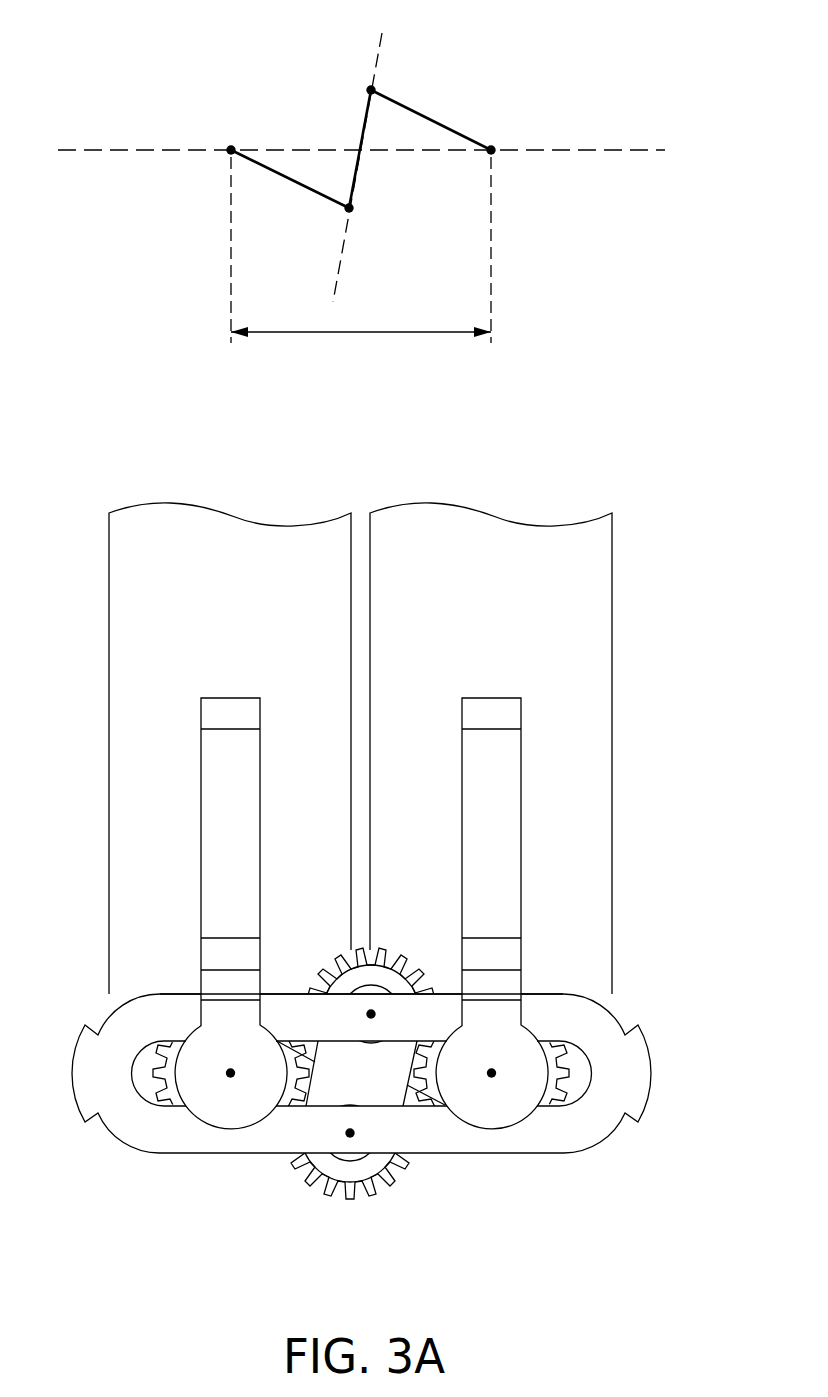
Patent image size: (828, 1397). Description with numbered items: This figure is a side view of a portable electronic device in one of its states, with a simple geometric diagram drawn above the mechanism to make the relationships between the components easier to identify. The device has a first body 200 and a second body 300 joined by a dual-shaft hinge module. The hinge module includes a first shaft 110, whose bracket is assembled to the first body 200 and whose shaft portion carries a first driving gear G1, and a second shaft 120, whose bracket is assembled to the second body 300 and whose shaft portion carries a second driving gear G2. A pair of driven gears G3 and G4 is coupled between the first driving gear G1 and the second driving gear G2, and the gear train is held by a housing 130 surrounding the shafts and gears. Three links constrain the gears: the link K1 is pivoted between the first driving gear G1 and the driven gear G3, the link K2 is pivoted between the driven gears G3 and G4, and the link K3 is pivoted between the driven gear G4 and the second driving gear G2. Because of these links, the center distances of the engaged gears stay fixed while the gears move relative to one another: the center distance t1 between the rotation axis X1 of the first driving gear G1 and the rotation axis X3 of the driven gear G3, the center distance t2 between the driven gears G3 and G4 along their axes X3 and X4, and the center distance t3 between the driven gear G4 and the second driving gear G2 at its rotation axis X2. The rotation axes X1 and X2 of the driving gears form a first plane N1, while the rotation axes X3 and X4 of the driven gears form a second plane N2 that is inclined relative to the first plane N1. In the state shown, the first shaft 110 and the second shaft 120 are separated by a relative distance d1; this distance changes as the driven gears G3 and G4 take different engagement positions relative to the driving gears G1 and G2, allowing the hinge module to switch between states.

The second body 300 is at (127, 612).
The first body 200 is at (595, 612).
The housing 130 is at (123, 1120).
The second shaft 120 is at (210, 1107).
The first shaft 110 is at (508, 1108).
The first driving gear G1 is at (543, 1107).
The second driving gear G2 is at (180, 1107).
The driven gear G3 is at (412, 973).
The driven gear G4 is at (371, 1192).
The link K1 is at (425, 1083).
The link K2 is at (330, 1090).
The link K3 is at (295, 1093).
The rotation axis X1 is at (490, 145).
The rotation axis X2 is at (231, 145).
The rotation axis X3 is at (368, 88).
The rotation axis X4 is at (352, 212).
The first plane N1 is at (379, 151).
The second plane N2 is at (368, 151).
The center distance t1 is at (422, 113).
The center distance t2 is at (362, 165).
The center distance t3 is at (300, 190).
The relative distance d1 is at (361, 267).